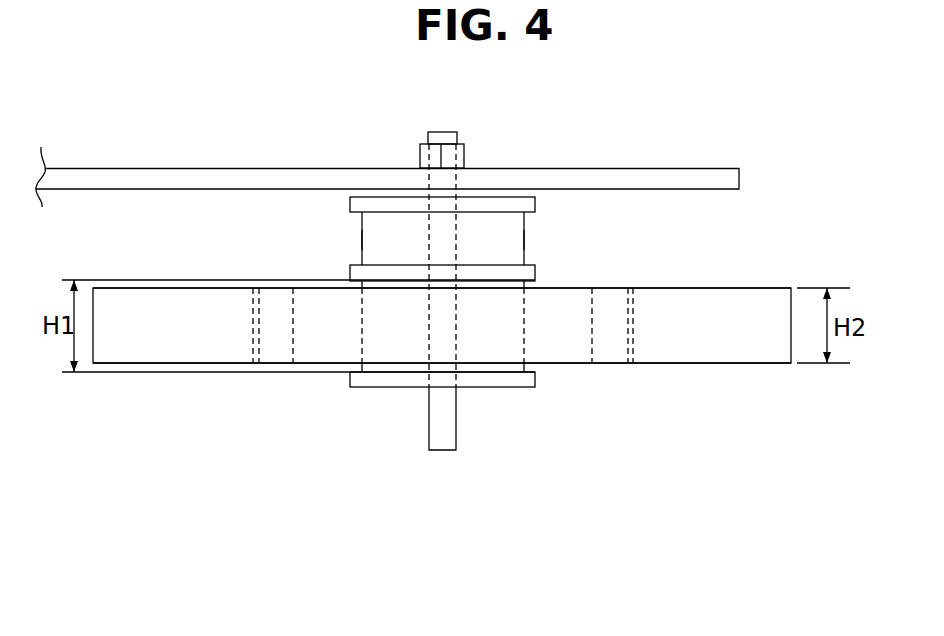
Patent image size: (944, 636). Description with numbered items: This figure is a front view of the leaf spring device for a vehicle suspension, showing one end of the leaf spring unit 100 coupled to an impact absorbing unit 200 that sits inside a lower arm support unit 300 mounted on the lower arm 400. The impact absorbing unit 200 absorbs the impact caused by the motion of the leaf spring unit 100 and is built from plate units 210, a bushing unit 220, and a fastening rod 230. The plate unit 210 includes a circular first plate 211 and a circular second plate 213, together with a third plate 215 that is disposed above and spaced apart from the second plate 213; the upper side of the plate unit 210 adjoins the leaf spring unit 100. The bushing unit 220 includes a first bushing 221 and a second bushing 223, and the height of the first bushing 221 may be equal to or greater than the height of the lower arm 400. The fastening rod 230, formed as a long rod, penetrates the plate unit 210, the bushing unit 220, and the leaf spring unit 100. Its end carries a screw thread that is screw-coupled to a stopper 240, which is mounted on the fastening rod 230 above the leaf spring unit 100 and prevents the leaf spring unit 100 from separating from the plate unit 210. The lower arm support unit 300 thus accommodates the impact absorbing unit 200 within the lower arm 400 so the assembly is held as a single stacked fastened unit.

The leaf spring unit 100 is at (663, 168).
The impact absorbing unit 200 is at (345, 528).
The plate unit 210 is at (359, 350).
The first plate 211 is at (375, 378).
The second plate 213 is at (370, 272).
The third plate 215 is at (365, 203).
The bushing unit 220 is at (492, 365).
The first bushing 221 is at (498, 338).
The second bushing 223 is at (498, 245).
The fastening rod 230 is at (443, 435).
The stopper 240 is at (467, 145).
The lower arm support unit 300 is at (592, 338).
The lower arm 400 is at (748, 345).